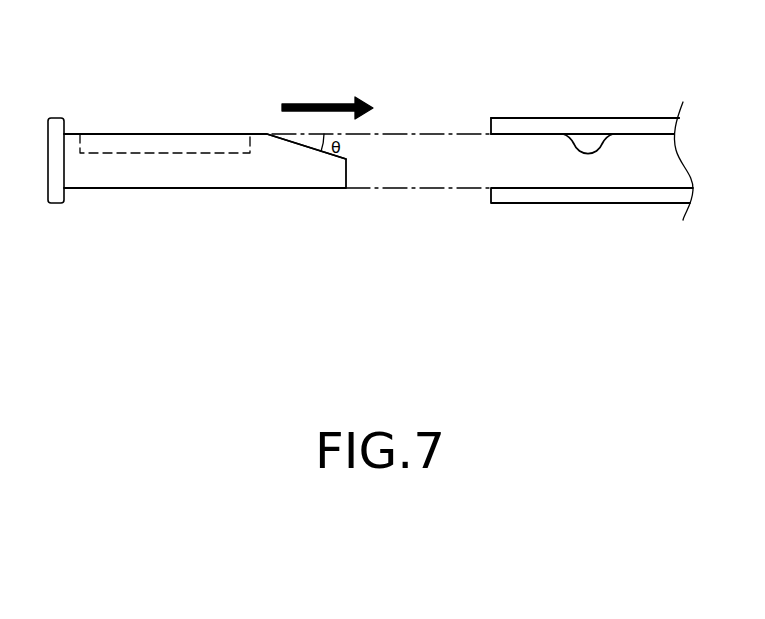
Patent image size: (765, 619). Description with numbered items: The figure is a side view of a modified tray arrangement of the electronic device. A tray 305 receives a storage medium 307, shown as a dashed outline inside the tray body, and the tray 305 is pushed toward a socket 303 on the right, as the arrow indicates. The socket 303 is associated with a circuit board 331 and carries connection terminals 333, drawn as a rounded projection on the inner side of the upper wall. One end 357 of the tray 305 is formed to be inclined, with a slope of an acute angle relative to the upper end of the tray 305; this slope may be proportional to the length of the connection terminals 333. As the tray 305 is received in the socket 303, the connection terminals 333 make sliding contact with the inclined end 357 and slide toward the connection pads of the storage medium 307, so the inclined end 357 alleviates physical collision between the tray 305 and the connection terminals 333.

The socket 303 is at (592, 197).
The tray 305 is at (208, 170).
The storage medium 307 is at (125, 142).
The circuit board 331 is at (643, 125).
The connection terminals 333 is at (588, 140).
The inclined end of the tray 357 is at (300, 145).